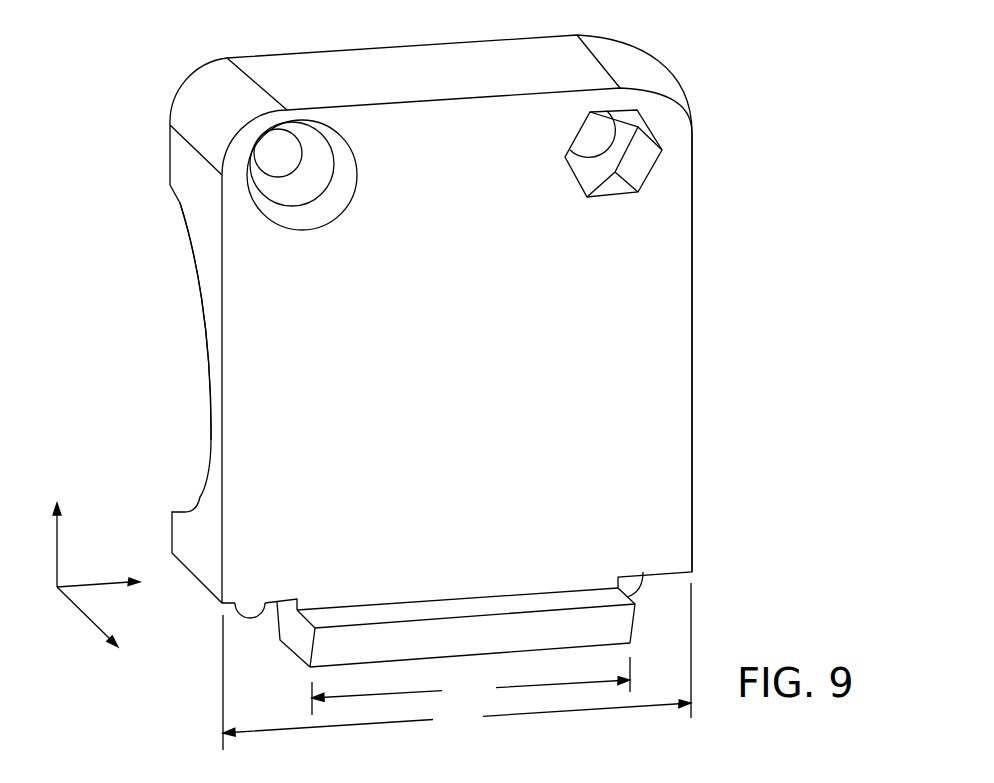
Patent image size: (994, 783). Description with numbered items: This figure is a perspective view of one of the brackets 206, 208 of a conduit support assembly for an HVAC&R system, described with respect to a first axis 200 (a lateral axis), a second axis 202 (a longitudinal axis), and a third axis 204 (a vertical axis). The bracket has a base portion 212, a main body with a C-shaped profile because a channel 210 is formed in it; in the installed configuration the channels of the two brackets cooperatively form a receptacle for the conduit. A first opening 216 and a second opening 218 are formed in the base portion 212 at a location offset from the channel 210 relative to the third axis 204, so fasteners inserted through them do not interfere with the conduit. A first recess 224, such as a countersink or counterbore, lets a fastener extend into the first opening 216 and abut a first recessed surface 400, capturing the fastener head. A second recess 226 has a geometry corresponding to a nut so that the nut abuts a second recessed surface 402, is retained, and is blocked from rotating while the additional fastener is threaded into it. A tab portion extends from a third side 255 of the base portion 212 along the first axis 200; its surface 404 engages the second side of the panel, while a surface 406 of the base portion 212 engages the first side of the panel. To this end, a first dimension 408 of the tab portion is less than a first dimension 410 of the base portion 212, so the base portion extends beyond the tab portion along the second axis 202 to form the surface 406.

The first bracket 206 is at (190, 40).
The second bracket 208 is at (361, 313).
The channel 210 is at (168, 287).
The base portion 212 is at (722, 298).
The first recessed surface 400 is at (317, 155).
The first opening 216 is at (282, 158).
The first recess 224 is at (298, 217).
The second opening 218 is at (593, 133).
The second recessed surface 402 is at (597, 163).
The second recess 226 is at (607, 188).
The surface of the base portion 406 is at (265, 598).
The surface of the tab portion 404 is at (643, 572).
The third side 255 is at (258, 658).
The first dimension of the tab portion 408 is at (471, 686).
The first dimension of the base portion 410 is at (457, 666).
The third axis 204 is at (58, 552).
The second axis 202 is at (95, 583).
The first axis 200 is at (84, 612).